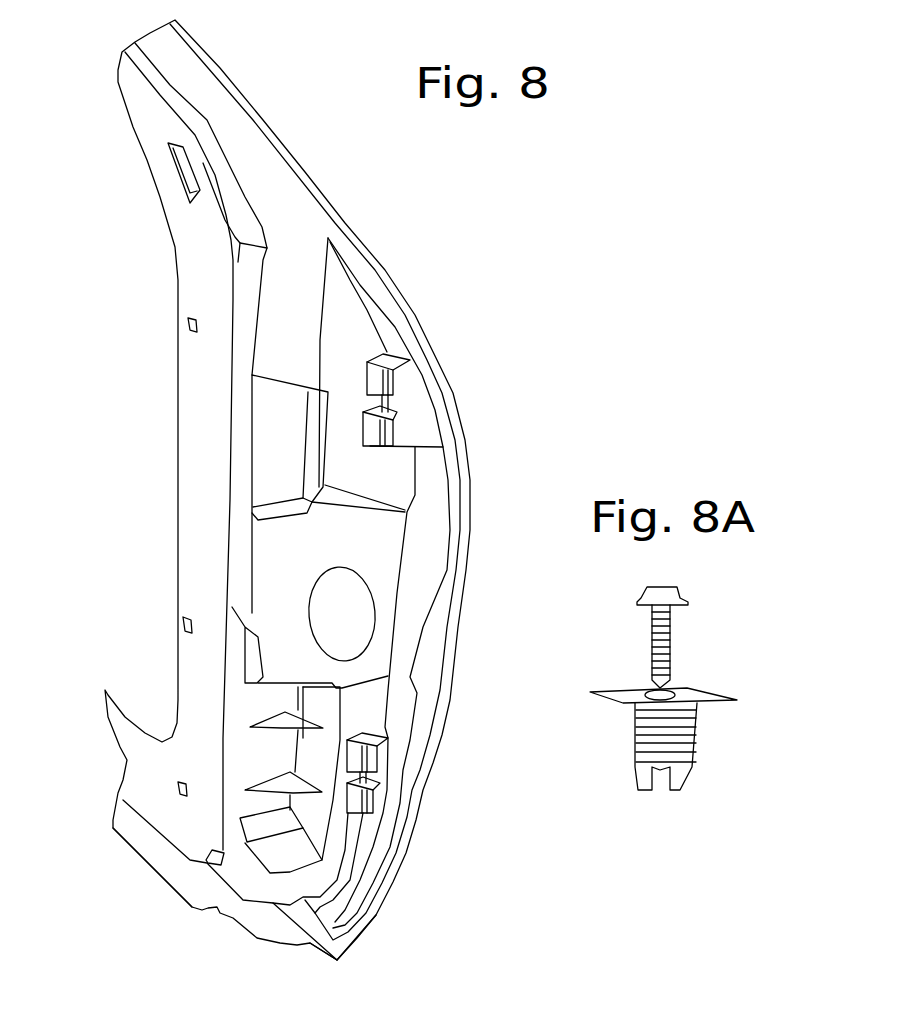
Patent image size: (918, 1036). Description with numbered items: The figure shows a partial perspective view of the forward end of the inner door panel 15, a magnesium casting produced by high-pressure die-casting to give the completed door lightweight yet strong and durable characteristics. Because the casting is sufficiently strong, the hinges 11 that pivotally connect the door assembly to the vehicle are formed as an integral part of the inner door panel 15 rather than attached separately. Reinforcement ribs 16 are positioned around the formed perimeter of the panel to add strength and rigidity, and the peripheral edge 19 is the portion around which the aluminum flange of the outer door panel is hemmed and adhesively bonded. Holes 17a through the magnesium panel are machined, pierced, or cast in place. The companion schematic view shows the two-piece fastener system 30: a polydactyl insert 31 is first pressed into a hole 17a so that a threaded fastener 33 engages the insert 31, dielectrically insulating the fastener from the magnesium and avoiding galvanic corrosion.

In FIG. 8, the inner door panel 15 is at (430, 241).
In FIG. 8, the hinges 11 is at (415, 412).
In FIG. 8, the reinforcement ribs 16 is at (257, 783).
In FIG. 8, the holes 17a is at (182, 322).
In FIG. 8, the peripheral edge 19 is at (468, 645).
In FIG. 8A, the two-piece fastener system 30 is at (628, 812).
In FIG. 8A, the polydactyl insert 31 is at (713, 703).
In FIG. 8A, the threaded fastener 33 is at (676, 593).